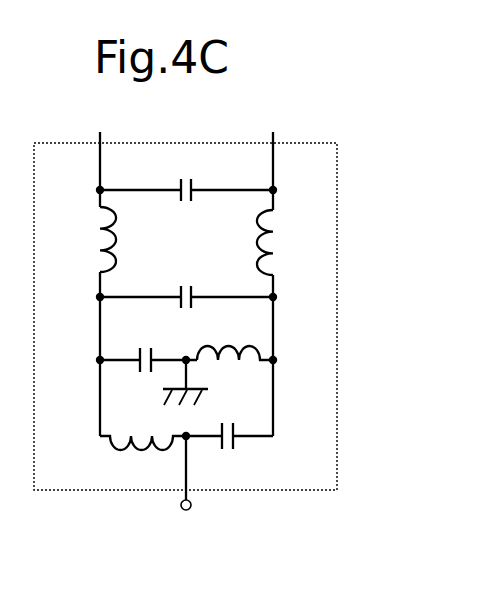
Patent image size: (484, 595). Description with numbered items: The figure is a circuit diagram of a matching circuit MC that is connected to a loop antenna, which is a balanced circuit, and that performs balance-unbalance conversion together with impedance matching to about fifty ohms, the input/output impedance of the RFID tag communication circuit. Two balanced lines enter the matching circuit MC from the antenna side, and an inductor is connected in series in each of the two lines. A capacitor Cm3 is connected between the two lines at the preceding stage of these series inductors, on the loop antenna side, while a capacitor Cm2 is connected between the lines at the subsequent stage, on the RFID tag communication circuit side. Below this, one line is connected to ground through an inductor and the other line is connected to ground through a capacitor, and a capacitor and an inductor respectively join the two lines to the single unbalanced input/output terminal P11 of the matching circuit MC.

The matching circuit MC is at (337, 318).
The capacitor Cm3 is at (186, 174).
The capacitor Cm2 is at (186, 282).
The input/output terminal P11 is at (185, 488).